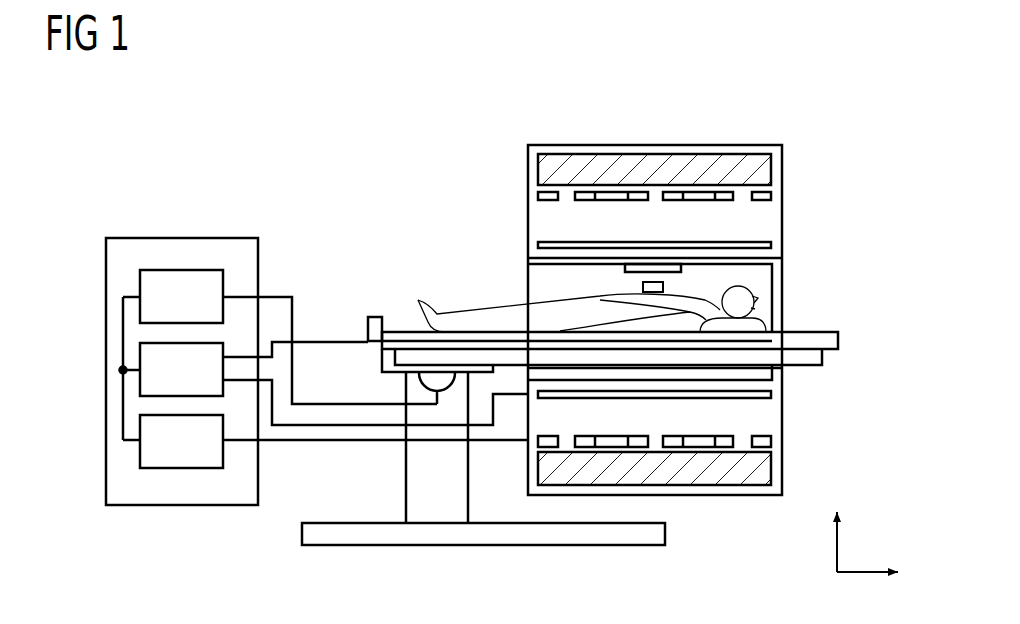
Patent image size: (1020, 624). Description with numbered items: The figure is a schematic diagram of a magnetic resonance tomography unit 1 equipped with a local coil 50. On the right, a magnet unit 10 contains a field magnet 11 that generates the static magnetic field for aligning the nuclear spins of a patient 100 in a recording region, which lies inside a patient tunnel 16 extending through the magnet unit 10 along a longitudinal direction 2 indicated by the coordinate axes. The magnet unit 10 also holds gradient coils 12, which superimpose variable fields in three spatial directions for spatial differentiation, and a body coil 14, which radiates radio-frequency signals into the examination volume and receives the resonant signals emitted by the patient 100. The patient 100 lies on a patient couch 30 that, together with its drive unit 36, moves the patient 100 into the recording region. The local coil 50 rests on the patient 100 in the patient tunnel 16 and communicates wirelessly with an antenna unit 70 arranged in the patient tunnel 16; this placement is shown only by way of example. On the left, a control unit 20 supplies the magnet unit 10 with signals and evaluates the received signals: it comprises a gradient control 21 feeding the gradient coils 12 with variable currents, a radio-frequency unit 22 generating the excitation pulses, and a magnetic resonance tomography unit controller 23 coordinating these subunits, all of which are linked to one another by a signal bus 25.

The magnetic resonance tomography unit 1 is at (508, 74).
The longitudinal direction 2 is at (855, 570).
The magnet unit 10 is at (780, 125).
The field magnet 11 is at (648, 165).
The gradient coils 12 is at (762, 198).
The body coil 14 is at (772, 245).
The patient tunnel 16 is at (816, 296).
The control unit 20 is at (221, 214).
The gradient control 21 is at (187, 470).
The radio-frequency unit 22 is at (138, 358).
The magnetic resonance tomography unit controller 23 is at (185, 268).
The signal bus 25 is at (123, 405).
The patient couch 30 is at (400, 332).
The drive unit 36 is at (430, 392).
The local coil 50 is at (640, 288).
The antenna unit 70 is at (652, 262).
The patient 100 is at (460, 322).